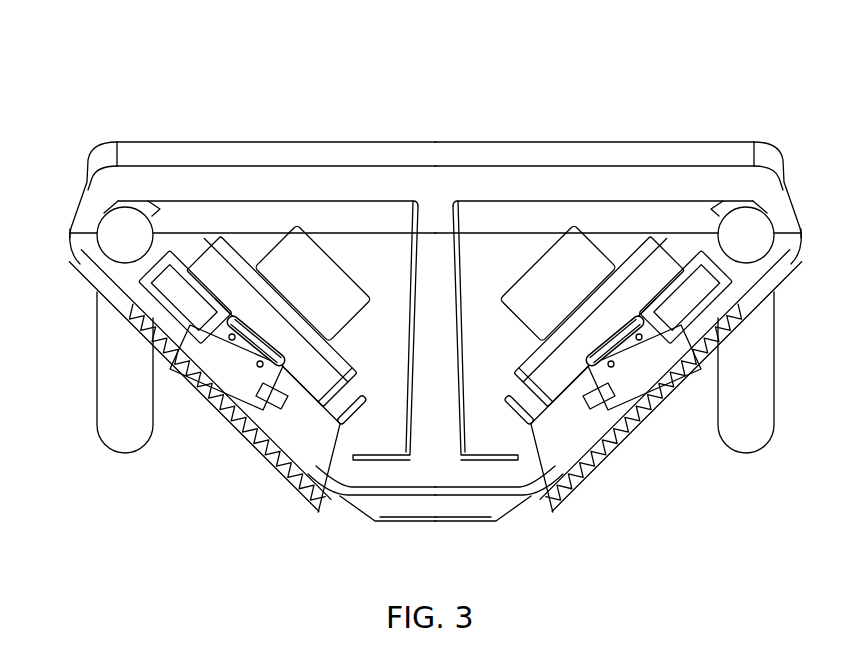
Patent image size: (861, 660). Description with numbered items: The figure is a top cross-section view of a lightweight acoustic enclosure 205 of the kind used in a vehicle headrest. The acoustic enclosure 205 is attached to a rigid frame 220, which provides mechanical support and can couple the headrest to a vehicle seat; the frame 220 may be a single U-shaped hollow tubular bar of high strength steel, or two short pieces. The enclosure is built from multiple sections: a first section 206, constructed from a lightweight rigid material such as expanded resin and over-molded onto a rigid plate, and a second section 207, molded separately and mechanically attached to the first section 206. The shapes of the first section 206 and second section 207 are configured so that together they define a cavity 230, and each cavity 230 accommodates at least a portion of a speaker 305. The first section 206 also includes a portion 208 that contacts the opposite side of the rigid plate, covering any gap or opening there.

The acoustic enclosure 205 is at (716, 58).
The first section 206 is at (437, 370).
The second section 207 is at (438, 186).
The portion 208 is at (437, 515).
The frame 220 is at (105, 400).
The cavity 230 is at (383, 433).
The speaker 305 is at (244, 403).